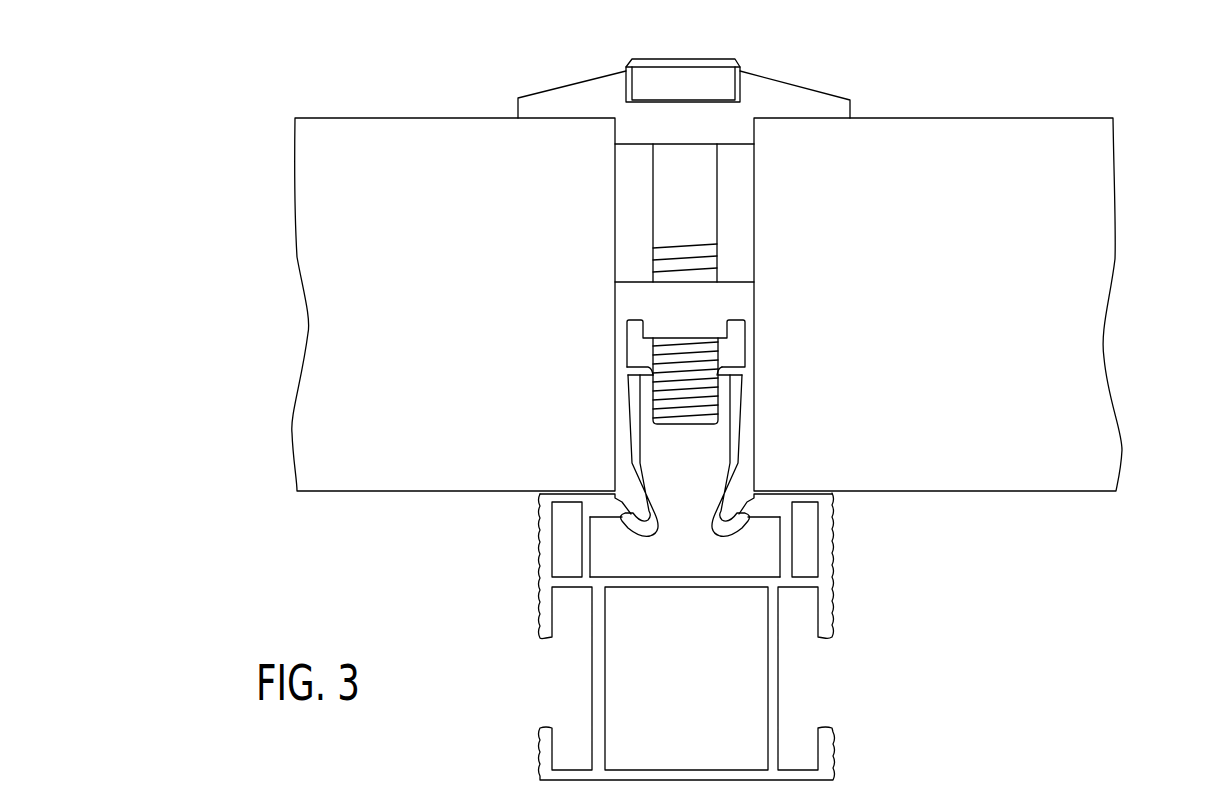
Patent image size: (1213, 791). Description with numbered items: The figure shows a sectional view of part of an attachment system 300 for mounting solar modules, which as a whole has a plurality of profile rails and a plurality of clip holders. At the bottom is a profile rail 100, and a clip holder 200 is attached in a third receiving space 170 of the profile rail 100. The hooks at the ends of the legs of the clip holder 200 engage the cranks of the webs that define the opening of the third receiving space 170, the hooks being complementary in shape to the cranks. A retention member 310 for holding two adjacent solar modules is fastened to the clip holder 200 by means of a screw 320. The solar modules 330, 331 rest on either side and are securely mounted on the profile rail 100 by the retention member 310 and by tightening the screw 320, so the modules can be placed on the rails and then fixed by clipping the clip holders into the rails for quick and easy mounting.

The profile rail 100 is at (730, 685).
The third receiving space 170 is at (613, 547).
The clip holder 200 is at (737, 506).
The attachment system 300 is at (850, 217).
The retention member 310 is at (793, 90).
The screw 320 is at (692, 80).
The solar module 330 is at (1098, 258).
The solar module 331 is at (317, 260).